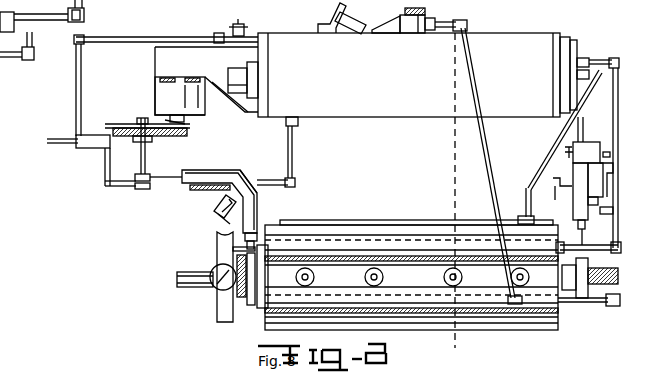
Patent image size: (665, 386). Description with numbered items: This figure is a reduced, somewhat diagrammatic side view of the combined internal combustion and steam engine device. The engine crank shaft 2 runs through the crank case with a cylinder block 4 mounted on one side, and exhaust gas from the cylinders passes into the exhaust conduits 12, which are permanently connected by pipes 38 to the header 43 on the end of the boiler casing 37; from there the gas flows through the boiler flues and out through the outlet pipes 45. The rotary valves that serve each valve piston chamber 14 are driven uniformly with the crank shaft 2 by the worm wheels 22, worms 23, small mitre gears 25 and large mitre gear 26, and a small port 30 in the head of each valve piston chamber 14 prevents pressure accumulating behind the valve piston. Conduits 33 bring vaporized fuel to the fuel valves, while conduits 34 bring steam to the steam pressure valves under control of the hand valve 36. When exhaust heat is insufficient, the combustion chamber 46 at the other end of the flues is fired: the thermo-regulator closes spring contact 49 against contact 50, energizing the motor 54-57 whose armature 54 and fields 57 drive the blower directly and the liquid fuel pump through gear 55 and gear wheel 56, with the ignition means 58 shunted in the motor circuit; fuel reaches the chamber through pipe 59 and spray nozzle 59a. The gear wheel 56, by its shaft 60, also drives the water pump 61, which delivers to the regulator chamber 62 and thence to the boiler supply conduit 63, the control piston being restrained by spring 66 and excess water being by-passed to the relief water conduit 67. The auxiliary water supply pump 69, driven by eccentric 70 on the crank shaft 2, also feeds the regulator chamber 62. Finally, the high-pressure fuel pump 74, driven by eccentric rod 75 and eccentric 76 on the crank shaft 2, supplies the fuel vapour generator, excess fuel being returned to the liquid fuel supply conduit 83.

The crank shaft 2 is at (177, 280).
The cylinder block 4 is at (466, 277).
The exhaust conduits 12 is at (360, 226).
The valve piston chamber 14 is at (452, 362).
The worm wheels 22 is at (217, 237).
The worms 23 is at (217, 289).
The small mitre gears 25 is at (215, 287).
The large mitre gear 26 is at (221, 257).
The small port 30 is at (364, 282).
The conduits 33 is at (616, 129).
The conduits 34 is at (478, 148).
The hand valve 36 is at (403, 8).
The boiler casing 37 is at (526, 33).
The pipes 38 is at (555, 132).
The header 43 is at (574, 42).
The outlet pipes 45 is at (233, 66).
The combustion chamber 46 is at (233, 104).
The spring contact 49 is at (320, 28).
The contact 50 is at (340, 33).
The motor 54-57 is at (148, 100).
The motor armature 54 is at (148, 100).
The fields 57 is at (162, 98).
The gear 55 is at (172, 153).
The gear wheel 56 is at (147, 138).
The ignition means 58 is at (242, 18).
The pipe 59 is at (76, 118).
The spray nozzle 59a is at (218, 36).
The shaft 60 is at (141, 156).
The water pump 61 is at (190, 170).
The regulator chamber 62 is at (245, 170).
The boiler supply conduit 63 is at (294, 155).
The spring 66 is at (220, 212).
The relief water conduit 67 is at (195, 193).
The auxiliary water supply pump 69 is at (258, 213).
The eccentric 70 is at (294, 277).
The fuel pump 74 is at (576, 206).
The eccentric rod 75 is at (590, 262).
The eccentric 76 is at (588, 297).
The liquid fuel supply conduit 83 is at (598, 221).